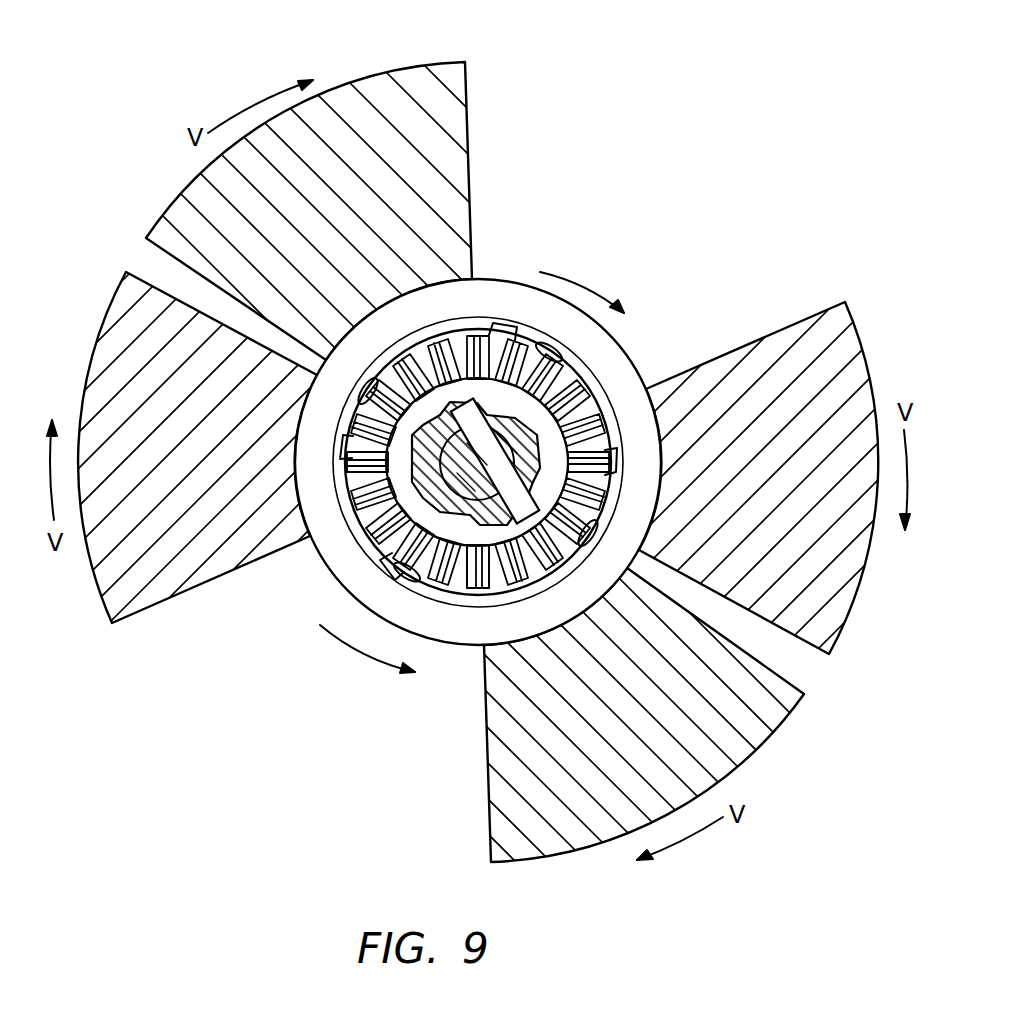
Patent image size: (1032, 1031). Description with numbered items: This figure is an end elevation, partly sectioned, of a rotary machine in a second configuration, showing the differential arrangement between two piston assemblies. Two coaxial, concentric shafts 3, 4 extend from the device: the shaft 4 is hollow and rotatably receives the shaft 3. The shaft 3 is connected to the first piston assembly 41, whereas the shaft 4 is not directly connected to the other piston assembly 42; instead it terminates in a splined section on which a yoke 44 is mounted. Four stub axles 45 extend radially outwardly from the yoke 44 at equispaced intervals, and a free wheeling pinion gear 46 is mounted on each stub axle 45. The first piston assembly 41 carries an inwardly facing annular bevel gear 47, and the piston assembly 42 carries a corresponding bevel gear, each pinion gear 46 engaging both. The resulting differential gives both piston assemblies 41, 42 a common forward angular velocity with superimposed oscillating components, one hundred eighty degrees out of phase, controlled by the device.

The shaft 3 is at (578, 394).
The shaft 4 is at (526, 505).
The first piston assembly 41 is at (113, 332).
The piston assembly 42 is at (386, 110).
The yoke 44 is at (470, 535).
The stub axle 45 is at (538, 345).
The pinion gear 46 is at (494, 342).
The annular bevel gear 47 is at (650, 374).